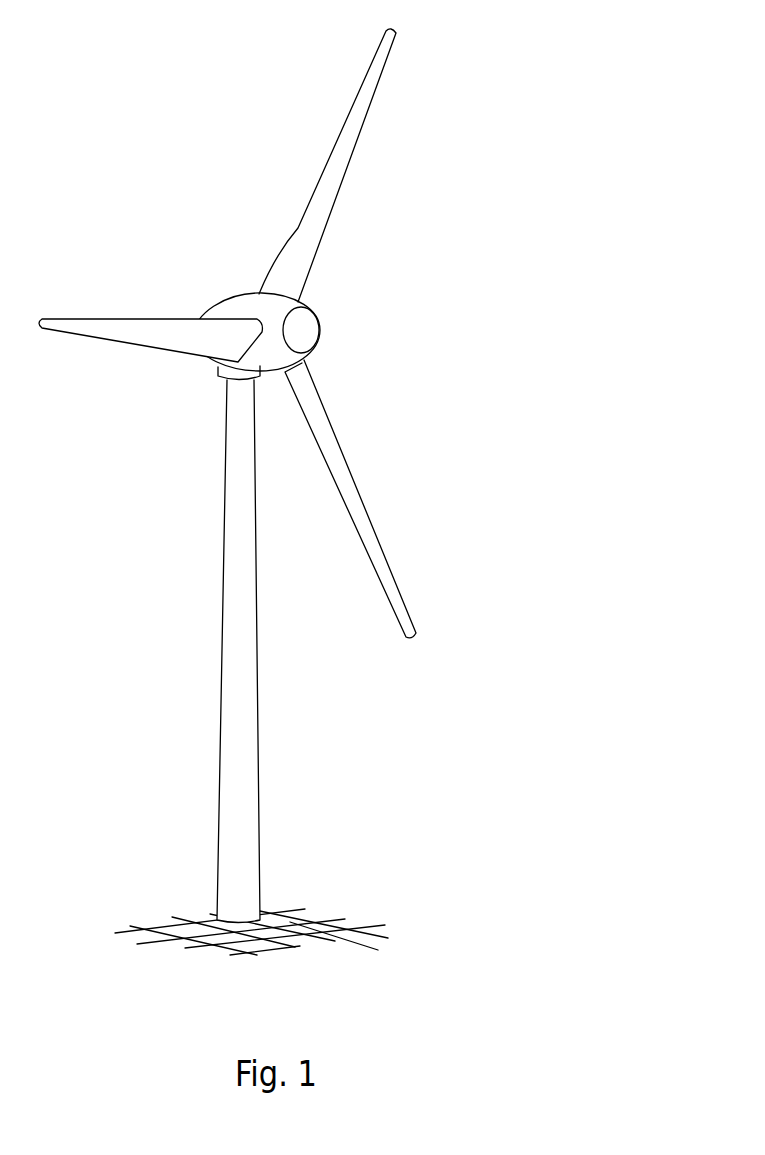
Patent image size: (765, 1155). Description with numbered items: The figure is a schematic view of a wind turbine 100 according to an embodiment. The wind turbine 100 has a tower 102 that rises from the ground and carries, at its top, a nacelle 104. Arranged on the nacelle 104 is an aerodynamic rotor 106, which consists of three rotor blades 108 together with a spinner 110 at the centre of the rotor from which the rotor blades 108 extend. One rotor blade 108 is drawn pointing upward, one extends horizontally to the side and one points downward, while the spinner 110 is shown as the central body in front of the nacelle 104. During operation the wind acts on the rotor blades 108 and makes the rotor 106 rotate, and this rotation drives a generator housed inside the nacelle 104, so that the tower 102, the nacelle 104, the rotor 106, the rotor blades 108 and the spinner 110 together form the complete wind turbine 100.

The wind turbine 100 is at (190, 431).
The tower 102 is at (243, 732).
The nacelle 104 is at (233, 307).
The aerodynamic rotor 106 is at (371, 267).
The rotor blade 108 is at (96, 318).
The spinner 110 is at (307, 330).